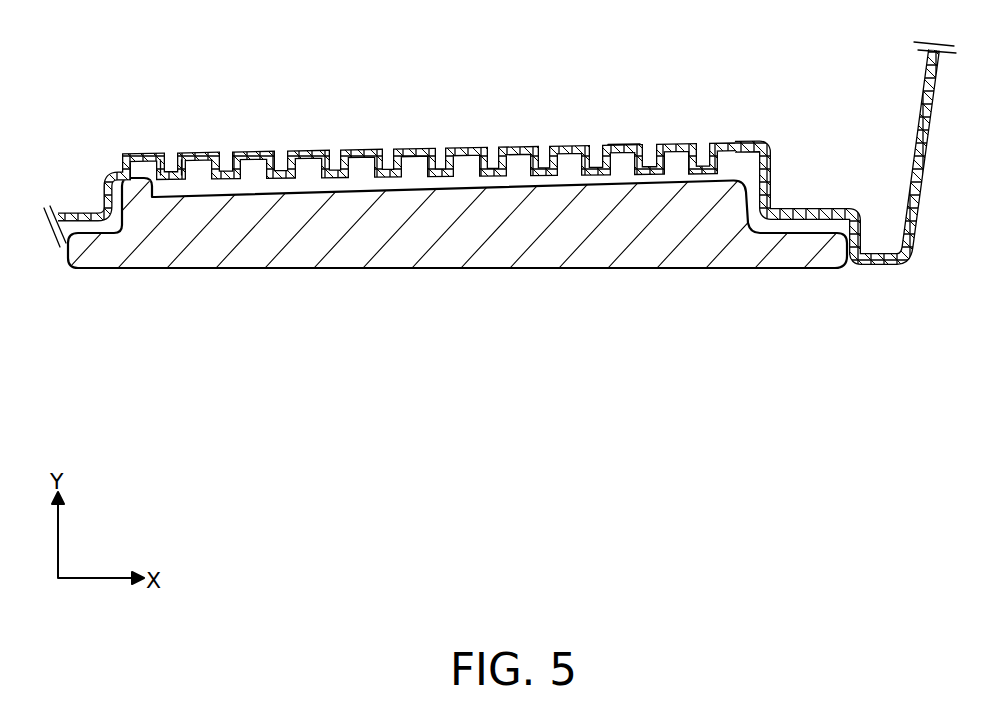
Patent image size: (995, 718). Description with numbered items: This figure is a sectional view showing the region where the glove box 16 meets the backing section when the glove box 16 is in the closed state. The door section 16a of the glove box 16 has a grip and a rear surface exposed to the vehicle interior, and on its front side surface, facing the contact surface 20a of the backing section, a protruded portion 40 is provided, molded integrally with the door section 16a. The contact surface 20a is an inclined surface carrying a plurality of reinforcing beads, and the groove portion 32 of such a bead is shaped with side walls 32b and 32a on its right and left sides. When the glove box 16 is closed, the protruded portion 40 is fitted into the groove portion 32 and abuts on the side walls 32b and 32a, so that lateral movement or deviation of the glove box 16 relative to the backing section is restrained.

The glove box 16 is at (549, 300).
The door section 16a is at (398, 270).
The contact surface 20a is at (619, 142).
The groove portion 32 is at (198, 188).
The side wall 32a is at (190, 167).
The side wall 32b is at (192, 167).
The protruded portion 40 is at (143, 181).